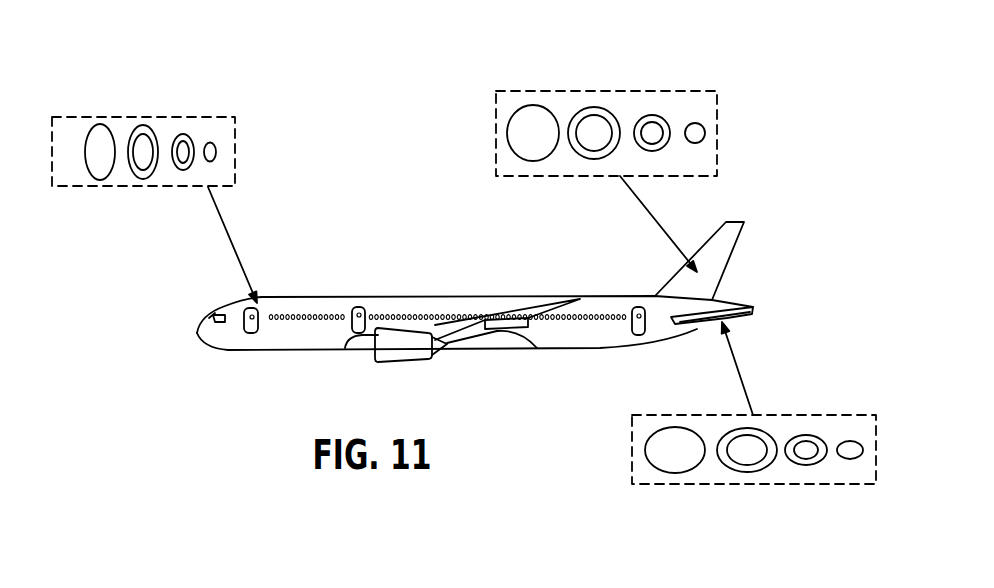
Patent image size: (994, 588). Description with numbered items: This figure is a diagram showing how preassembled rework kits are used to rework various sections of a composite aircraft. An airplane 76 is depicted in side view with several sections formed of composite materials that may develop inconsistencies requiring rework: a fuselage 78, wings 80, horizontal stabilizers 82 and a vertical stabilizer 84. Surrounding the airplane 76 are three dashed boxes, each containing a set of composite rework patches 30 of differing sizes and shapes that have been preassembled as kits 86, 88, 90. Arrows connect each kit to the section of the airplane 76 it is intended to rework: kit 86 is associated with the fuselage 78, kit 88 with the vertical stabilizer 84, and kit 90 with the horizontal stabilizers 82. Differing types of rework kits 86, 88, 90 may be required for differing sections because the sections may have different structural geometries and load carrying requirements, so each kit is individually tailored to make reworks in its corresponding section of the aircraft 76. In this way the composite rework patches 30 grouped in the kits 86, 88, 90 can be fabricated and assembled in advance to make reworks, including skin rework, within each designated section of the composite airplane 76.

The composite rework patches 30 is at (197, 96).
The airplane 76 is at (451, 321).
The fuselage 78 is at (222, 332).
The wings 80 is at (527, 318).
The horizontal stabilizers 82 is at (692, 319).
The vertical stabilizer 84 is at (713, 253).
The rework kit 86 is at (118, 117).
The rework kit 88 is at (592, 91).
The rework kit 90 is at (749, 485).